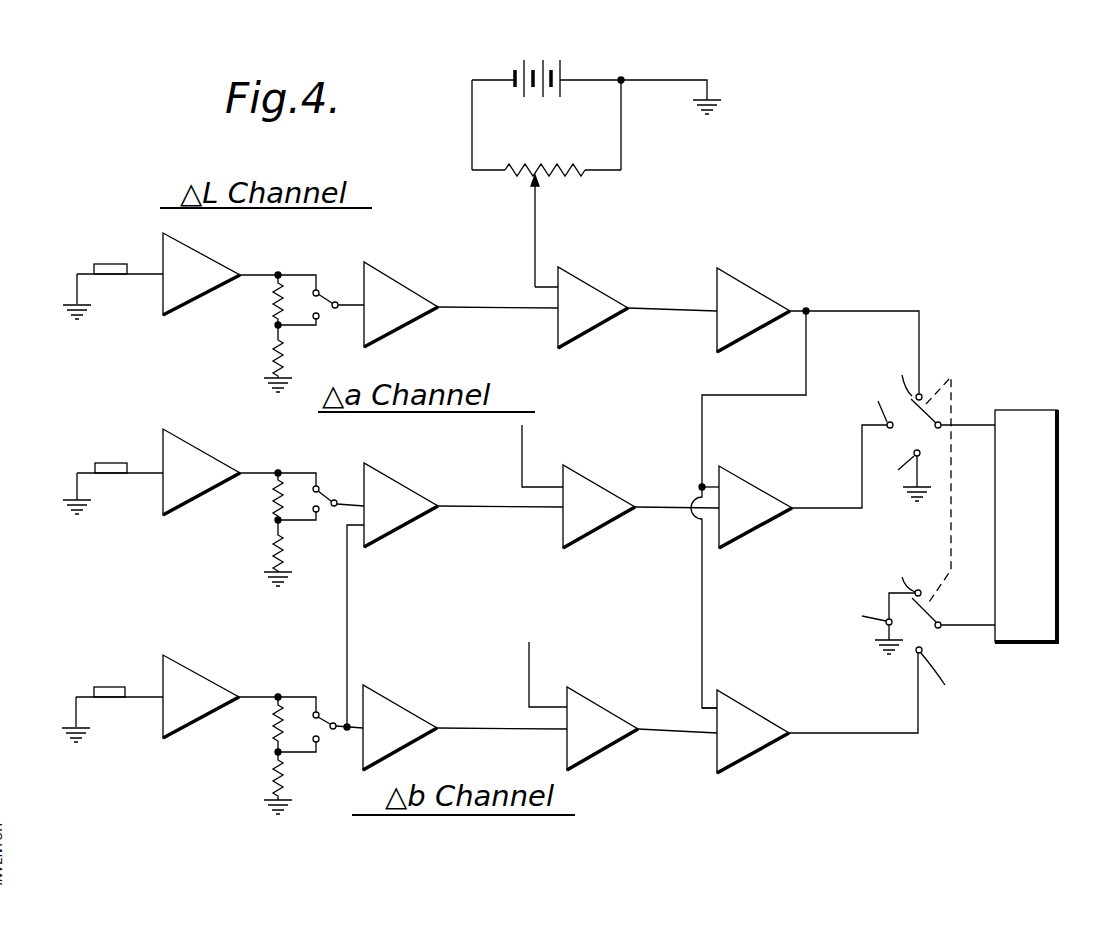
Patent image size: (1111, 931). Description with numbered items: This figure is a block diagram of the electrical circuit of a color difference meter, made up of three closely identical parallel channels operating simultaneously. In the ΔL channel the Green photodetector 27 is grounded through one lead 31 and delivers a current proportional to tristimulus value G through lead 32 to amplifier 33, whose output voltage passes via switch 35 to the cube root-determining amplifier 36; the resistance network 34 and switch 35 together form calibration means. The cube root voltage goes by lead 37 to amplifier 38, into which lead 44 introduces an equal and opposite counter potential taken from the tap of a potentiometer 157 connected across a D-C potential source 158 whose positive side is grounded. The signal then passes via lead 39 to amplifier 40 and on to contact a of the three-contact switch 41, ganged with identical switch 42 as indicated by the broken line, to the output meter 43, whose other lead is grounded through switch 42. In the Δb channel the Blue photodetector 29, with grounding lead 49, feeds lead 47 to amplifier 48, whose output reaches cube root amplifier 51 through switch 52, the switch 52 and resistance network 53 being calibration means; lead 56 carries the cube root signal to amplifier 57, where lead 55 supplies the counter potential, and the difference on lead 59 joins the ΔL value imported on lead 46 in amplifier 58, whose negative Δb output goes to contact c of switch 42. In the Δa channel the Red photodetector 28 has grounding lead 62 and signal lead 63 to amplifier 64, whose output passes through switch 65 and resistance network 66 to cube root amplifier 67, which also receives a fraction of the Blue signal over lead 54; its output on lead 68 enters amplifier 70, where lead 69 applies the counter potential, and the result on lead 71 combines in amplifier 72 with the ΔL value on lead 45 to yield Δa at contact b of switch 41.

The Green photodetector 27 is at (113, 264).
The Red photodetector 28 is at (111, 463).
The Blue photodetector 29 is at (108, 687).
The lead 31 is at (76, 284).
The lead 32 is at (143, 276).
The amplifier 33 is at (205, 268).
The resistance network 34 is at (270, 304).
The switch 35 is at (329, 290).
The cube root-determining amplifier 36 is at (393, 297).
The lead 37 is at (490, 306).
The amplifier 38 is at (567, 323).
The lead 39 is at (662, 308).
The amplifier 40 is at (760, 303).
The three-contact switch 41 is at (930, 412).
The switch 42 is at (937, 610).
The output meter 43 is at (1045, 523).
The lead 44 is at (540, 240).
The lead 45 is at (710, 486).
The lead 46 is at (710, 707).
The lead 47 is at (140, 700).
The amplifier 48 is at (193, 687).
The grounding lead 49 is at (75, 712).
The amplifier 51 is at (400, 712).
The switch 52 is at (320, 713).
The resistance network 53 is at (268, 733).
The lead 54 is at (350, 590).
The lead 55 is at (532, 676).
The lead 56 is at (482, 728).
The amplifier 57 is at (590, 742).
The amplifier 58 is at (757, 723).
The lead 59 is at (658, 728).
The grounding lead 62 is at (76, 487).
The signal output lead 63 is at (145, 475).
The amplifier 64 is at (205, 467).
The switch 65 is at (328, 495).
The resistance network 66 is at (270, 503).
The cube root-determining amplifier 67 is at (410, 497).
The lead 68 is at (497, 508).
The lead 69 is at (523, 460).
The amplifier 70 is at (600, 507).
The lead 71 is at (658, 509).
The amplifier 72 is at (748, 521).
The potentiometer 157 is at (580, 182).
The D-C potential source 158 is at (561, 74).